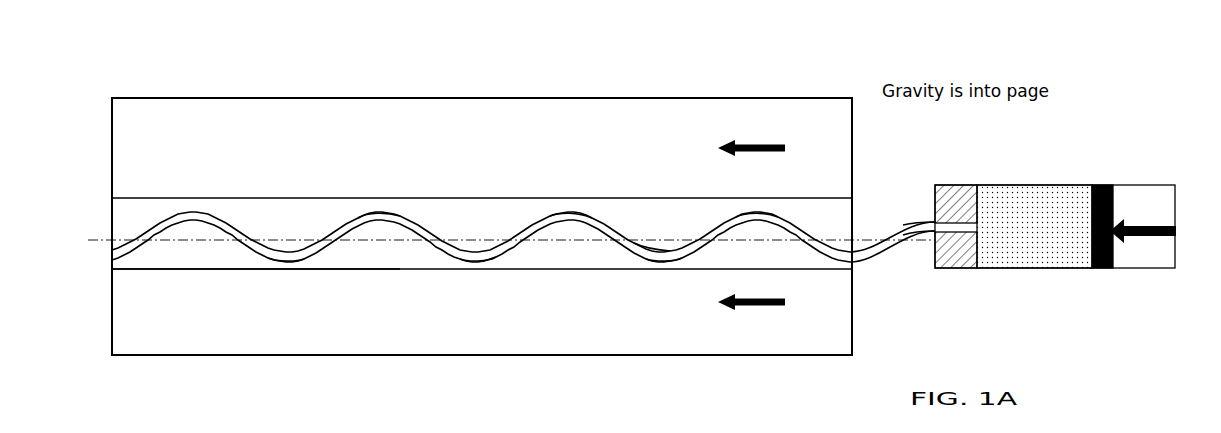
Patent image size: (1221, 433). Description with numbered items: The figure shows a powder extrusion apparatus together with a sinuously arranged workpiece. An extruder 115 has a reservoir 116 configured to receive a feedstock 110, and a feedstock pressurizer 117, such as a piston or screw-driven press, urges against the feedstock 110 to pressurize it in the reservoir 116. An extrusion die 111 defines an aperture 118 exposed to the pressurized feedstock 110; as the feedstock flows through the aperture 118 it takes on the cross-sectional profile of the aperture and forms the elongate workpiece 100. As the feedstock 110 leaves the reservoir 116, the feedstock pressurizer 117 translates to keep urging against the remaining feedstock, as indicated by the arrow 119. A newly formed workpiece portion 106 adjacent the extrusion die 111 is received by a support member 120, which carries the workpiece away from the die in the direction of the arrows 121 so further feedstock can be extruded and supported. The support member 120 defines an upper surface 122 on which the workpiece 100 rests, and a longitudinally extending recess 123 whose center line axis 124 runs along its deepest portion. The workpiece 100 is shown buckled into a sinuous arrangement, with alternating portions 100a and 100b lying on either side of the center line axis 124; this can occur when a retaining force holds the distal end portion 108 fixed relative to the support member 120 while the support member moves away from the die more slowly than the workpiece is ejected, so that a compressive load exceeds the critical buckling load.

The workpiece 100 is at (230, 220).
The lower contact portions of cable (troughs) 100a is at (488, 270).
The upper contact portions of cable (peaks) 100b is at (573, 210).
The workpiece portion 106 is at (894, 275).
The distal end portion 108 is at (147, 150).
The feedstock 110 is at (1046, 241).
The extrusion die 111 is at (963, 185).
The extruder 115 is at (1060, 297).
The reservoir 116 is at (1072, 185).
The feedstock pressurizer 117 is at (1102, 268).
The aperture 118 is at (950, 268).
The arrow 119 is at (1157, 225).
The support member 120 is at (278, 331).
The arrows 121 is at (766, 143).
The upper surface 122 is at (222, 127).
The recess 123 is at (258, 270).
The center line axis 124 is at (652, 240).